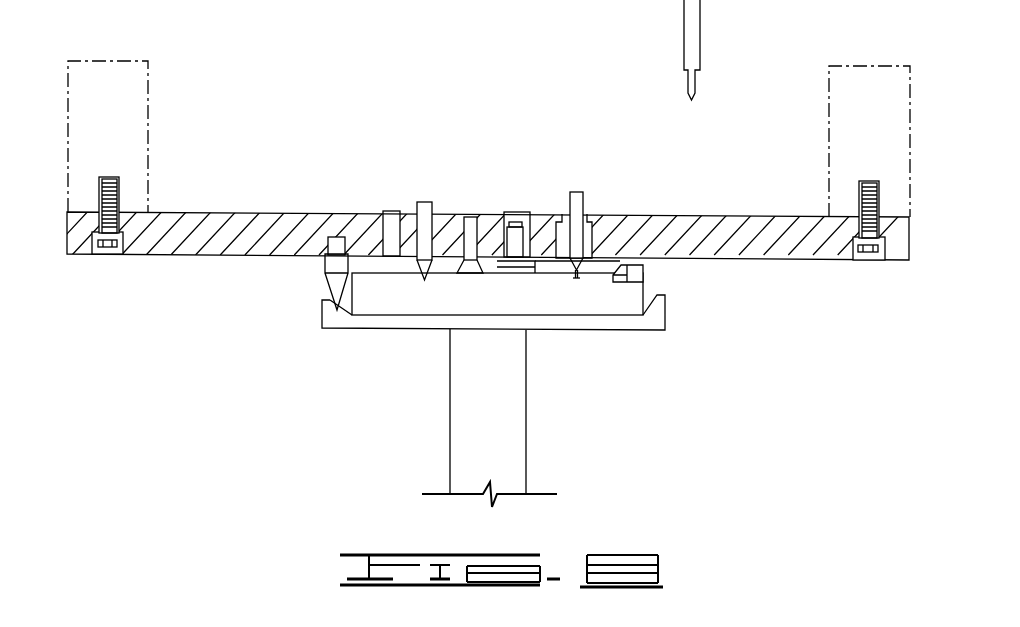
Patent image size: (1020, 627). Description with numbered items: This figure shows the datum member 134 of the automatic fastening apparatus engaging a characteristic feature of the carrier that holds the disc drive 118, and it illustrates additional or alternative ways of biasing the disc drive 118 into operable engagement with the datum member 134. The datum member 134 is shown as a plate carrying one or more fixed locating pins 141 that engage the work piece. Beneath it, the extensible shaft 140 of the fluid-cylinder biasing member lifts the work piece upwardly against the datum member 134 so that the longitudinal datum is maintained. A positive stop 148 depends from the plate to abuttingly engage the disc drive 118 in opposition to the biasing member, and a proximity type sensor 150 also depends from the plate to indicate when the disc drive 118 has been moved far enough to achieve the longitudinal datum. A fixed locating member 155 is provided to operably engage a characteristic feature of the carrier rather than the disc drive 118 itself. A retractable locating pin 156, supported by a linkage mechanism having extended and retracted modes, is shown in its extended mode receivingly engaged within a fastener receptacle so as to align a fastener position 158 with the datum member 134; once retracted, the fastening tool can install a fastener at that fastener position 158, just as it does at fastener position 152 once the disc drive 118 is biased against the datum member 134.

The datum member 134 is at (712, 193).
The fixed locating pin 141 is at (423, 202).
The positive stop 148 is at (472, 213).
The sensor 150 is at (512, 222).
The fixed locating member 155 is at (325, 263).
The retractable locating pin 156 is at (578, 192).
The fastener position 158 is at (575, 287).
The fastener position 152 is at (392, 282).
The disc drive 118 is at (652, 275).
The extensible shaft 140 is at (526, 452).